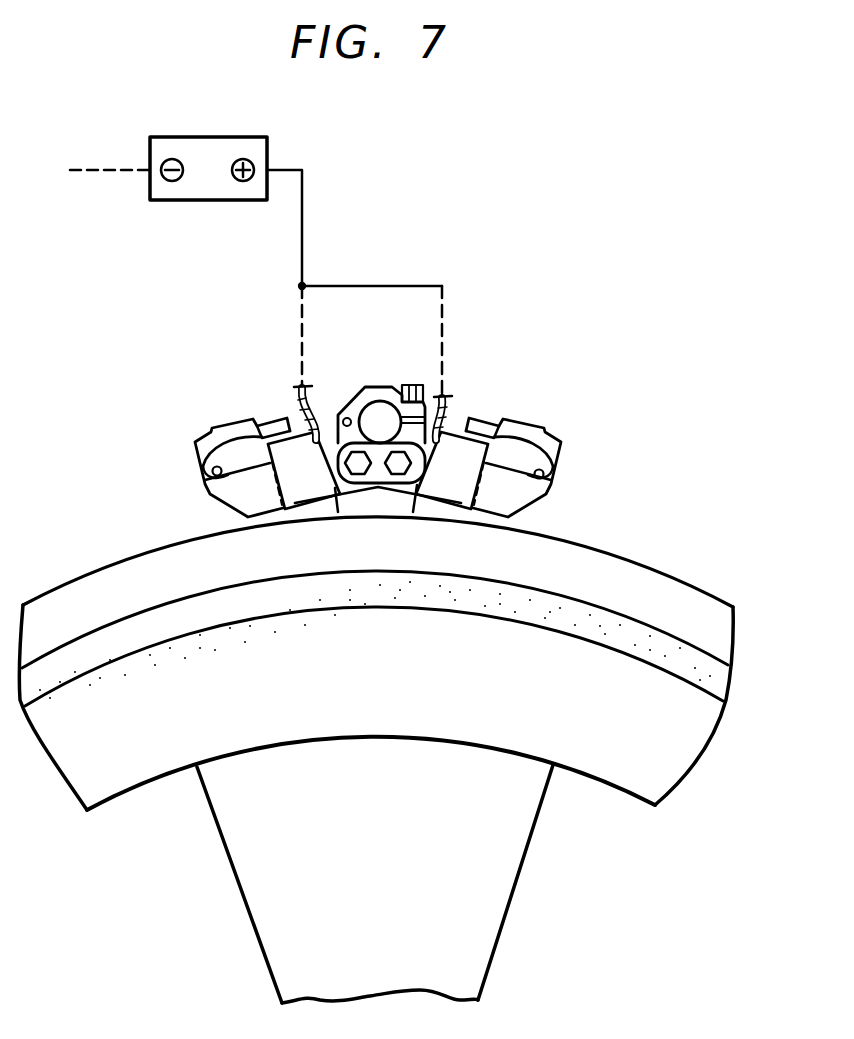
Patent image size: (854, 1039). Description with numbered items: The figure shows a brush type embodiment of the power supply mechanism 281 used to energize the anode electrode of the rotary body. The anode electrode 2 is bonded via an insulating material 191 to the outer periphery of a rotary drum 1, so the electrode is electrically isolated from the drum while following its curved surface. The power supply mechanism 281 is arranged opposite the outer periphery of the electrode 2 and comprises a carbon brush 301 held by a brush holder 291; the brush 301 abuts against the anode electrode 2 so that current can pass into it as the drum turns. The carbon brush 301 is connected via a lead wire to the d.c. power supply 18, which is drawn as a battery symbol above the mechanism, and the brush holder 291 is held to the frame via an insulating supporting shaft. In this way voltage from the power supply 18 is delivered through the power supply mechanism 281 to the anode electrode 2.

The d.c. power supply 18 is at (210, 137).
The anode electrode 2 is at (660, 580).
The insulating material 191 is at (730, 689).
The rotary drum 1 is at (695, 731).
The brush holder 291 is at (208, 498).
The carbon brush 301 is at (265, 412).
The power supply mechanism 281 is at (378, 386).